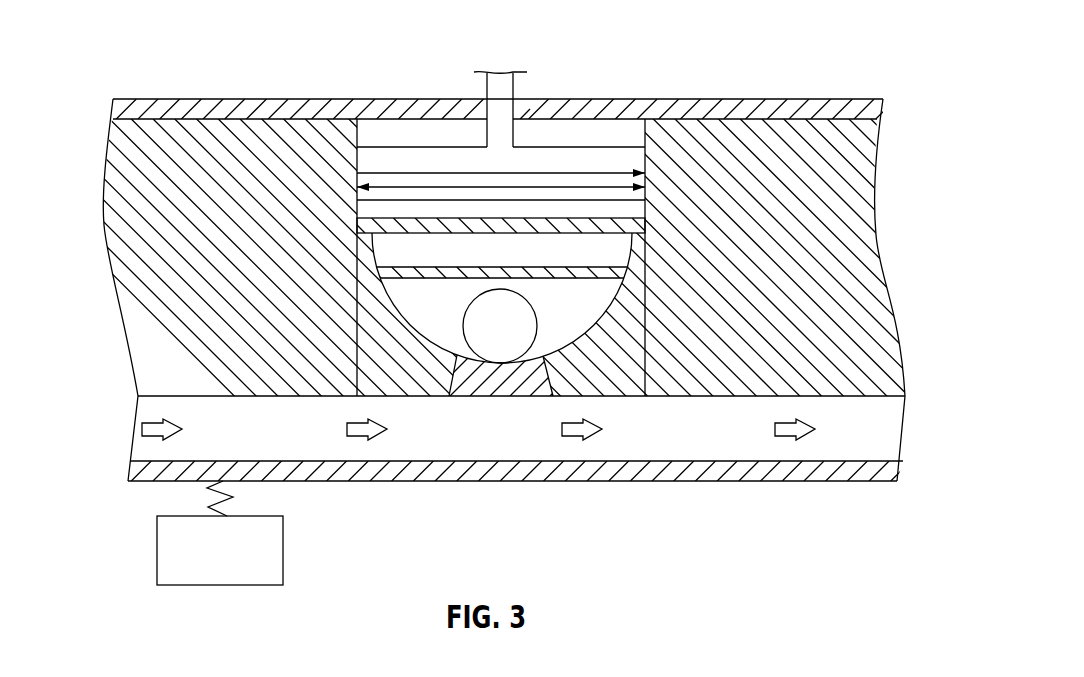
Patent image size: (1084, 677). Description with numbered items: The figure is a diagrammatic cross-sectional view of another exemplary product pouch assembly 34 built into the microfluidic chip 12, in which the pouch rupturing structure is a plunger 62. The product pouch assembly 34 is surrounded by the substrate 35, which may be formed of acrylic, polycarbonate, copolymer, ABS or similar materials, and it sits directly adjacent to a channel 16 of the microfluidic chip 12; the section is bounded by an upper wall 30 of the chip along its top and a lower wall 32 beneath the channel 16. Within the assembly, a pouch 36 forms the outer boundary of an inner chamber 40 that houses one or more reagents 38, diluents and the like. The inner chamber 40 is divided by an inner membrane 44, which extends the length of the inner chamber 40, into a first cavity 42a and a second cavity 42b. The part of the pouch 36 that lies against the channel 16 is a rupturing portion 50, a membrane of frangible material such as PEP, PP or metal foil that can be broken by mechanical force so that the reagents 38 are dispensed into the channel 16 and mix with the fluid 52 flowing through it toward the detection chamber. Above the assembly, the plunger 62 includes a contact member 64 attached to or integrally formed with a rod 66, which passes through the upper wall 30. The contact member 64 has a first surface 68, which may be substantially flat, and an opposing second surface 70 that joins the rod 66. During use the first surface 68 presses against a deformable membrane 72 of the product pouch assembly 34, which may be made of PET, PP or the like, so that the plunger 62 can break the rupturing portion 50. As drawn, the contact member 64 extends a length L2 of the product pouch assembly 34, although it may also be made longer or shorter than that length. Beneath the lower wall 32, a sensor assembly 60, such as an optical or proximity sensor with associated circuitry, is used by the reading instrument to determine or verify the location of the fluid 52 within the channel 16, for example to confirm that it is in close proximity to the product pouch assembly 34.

The microfluidic chip 12 is at (383, 97).
The channel 16 is at (263, 433).
The top wall 30 is at (113, 103).
The bottom wall 32 is at (137, 468).
The product pouch assembly 34 is at (345, 197).
The substrate 35 is at (135, 265).
The pouch 36 is at (633, 280).
The reagent 38 is at (515, 324).
The inner chamber 40 is at (377, 257).
The first cavity 42a is at (597, 307).
The second cavity 42b is at (408, 258).
The inner membrane 44 is at (527, 266).
The rupturing portion 50 is at (462, 394).
The fluid 52 is at (138, 428).
The sensor assembly 60 is at (283, 548).
The plunger 62 is at (630, 160).
The contact member 64 is at (365, 158).
The rod 66 is at (503, 95).
The first surface 68 is at (646, 176).
The second surface 70 is at (555, 146).
The deformable membrane 72 is at (632, 209).
The length L2 is at (459, 186).